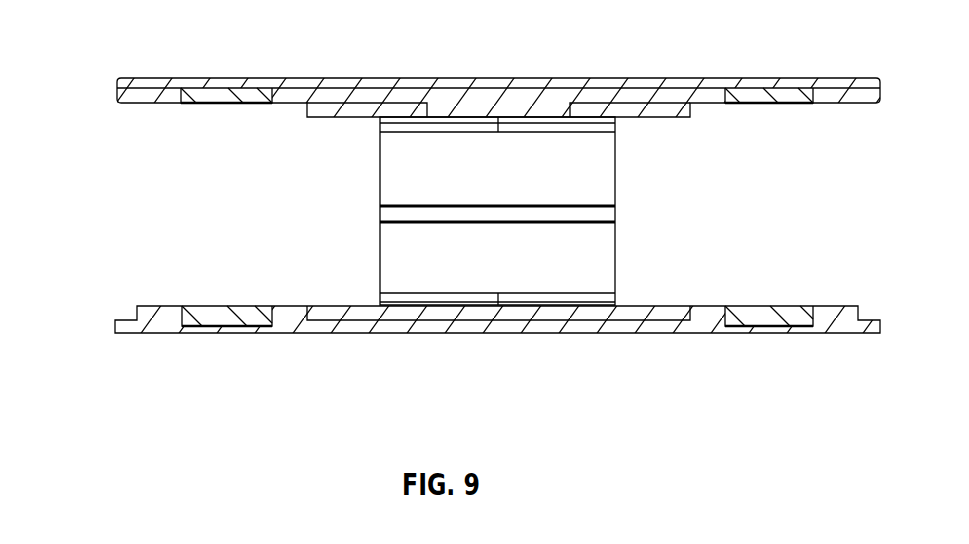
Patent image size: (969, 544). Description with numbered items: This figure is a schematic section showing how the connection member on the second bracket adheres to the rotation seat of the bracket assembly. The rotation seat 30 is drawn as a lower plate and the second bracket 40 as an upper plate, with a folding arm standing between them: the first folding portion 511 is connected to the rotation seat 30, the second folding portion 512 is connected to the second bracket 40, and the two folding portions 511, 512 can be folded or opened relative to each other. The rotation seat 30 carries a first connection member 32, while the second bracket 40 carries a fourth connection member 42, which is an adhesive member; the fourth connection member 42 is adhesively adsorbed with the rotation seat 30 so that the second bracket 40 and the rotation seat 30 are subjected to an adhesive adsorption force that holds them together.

The rotation seat 30 is at (155, 322).
The first connection member 32 is at (217, 325).
The second bracket 40 is at (130, 100).
The fourth connection member 42 is at (202, 94).
The first folding portion 511 is at (580, 250).
The second folding portion 512 is at (592, 172).